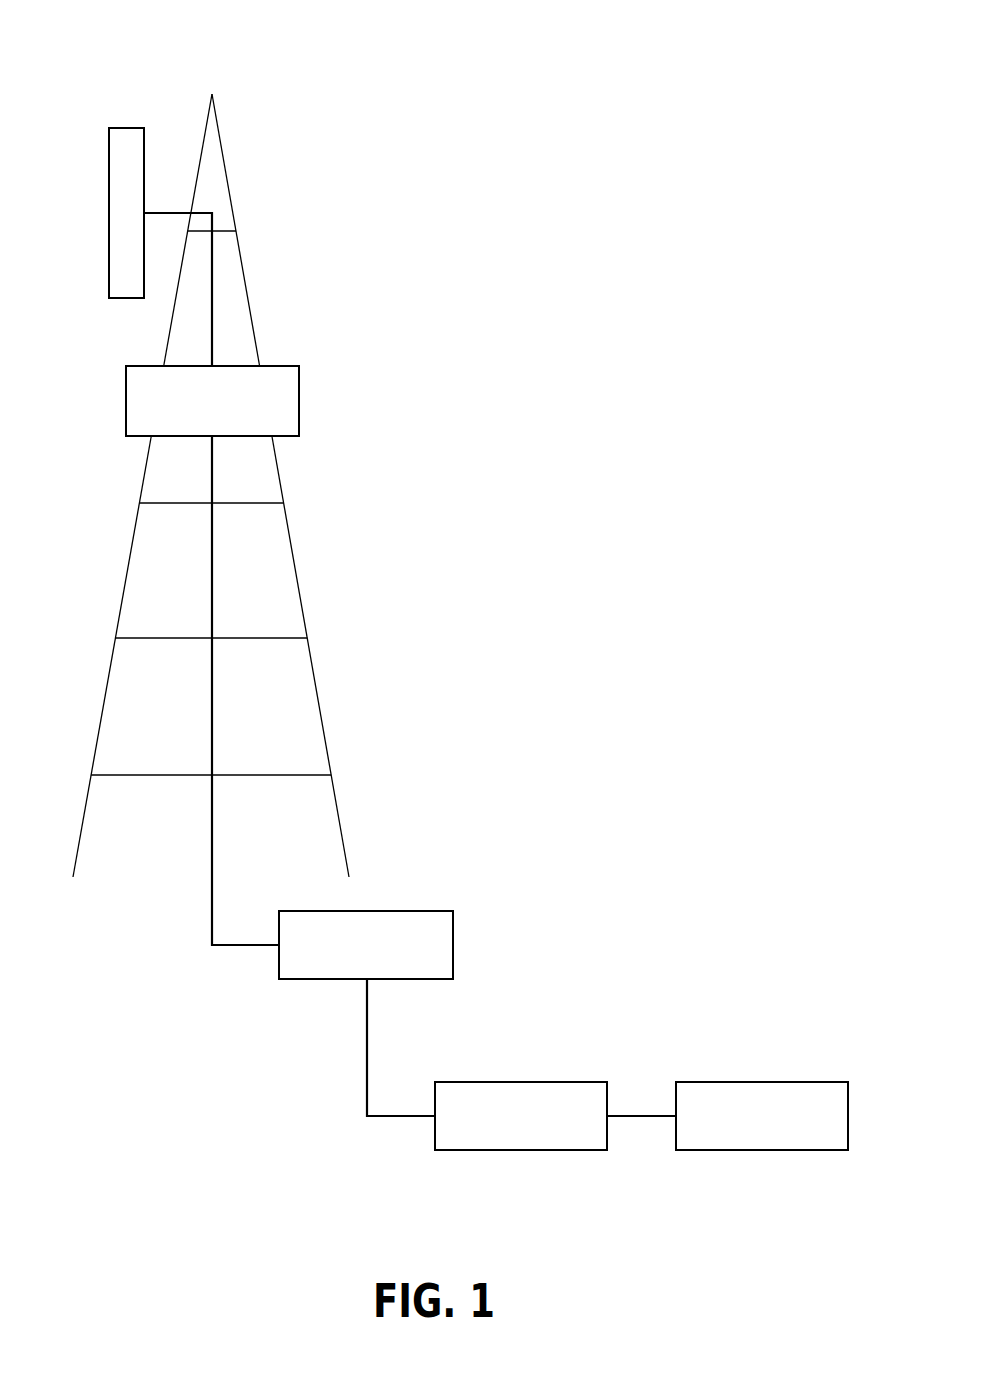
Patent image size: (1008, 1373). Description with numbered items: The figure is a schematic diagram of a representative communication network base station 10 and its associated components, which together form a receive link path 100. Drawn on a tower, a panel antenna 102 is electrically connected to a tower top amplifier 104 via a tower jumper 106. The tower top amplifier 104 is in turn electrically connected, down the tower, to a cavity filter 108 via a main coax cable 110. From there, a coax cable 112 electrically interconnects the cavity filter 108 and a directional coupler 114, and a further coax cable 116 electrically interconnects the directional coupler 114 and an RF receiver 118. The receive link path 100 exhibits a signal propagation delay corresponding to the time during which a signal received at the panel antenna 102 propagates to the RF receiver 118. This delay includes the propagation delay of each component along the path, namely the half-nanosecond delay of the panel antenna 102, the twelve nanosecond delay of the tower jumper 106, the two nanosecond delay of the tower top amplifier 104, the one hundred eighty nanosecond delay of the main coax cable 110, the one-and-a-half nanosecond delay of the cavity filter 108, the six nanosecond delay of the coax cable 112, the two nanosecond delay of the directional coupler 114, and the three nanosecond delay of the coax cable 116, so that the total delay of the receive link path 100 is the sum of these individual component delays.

The base station 10 is at (742, 108).
The receive link path 100 is at (586, 297).
The panel antenna 102 is at (127, 128).
The tower top amplifier 104 is at (299, 400).
The tower jumper 106 is at (332, 248).
The cavity filter 108 is at (453, 945).
The main coax cable 110 is at (214, 571).
The coax cable 112 is at (363, 1083).
The directional coupler 114 is at (485, 1082).
The coax cable 116 is at (641, 1116).
The RF receiver 118 is at (728, 1082).